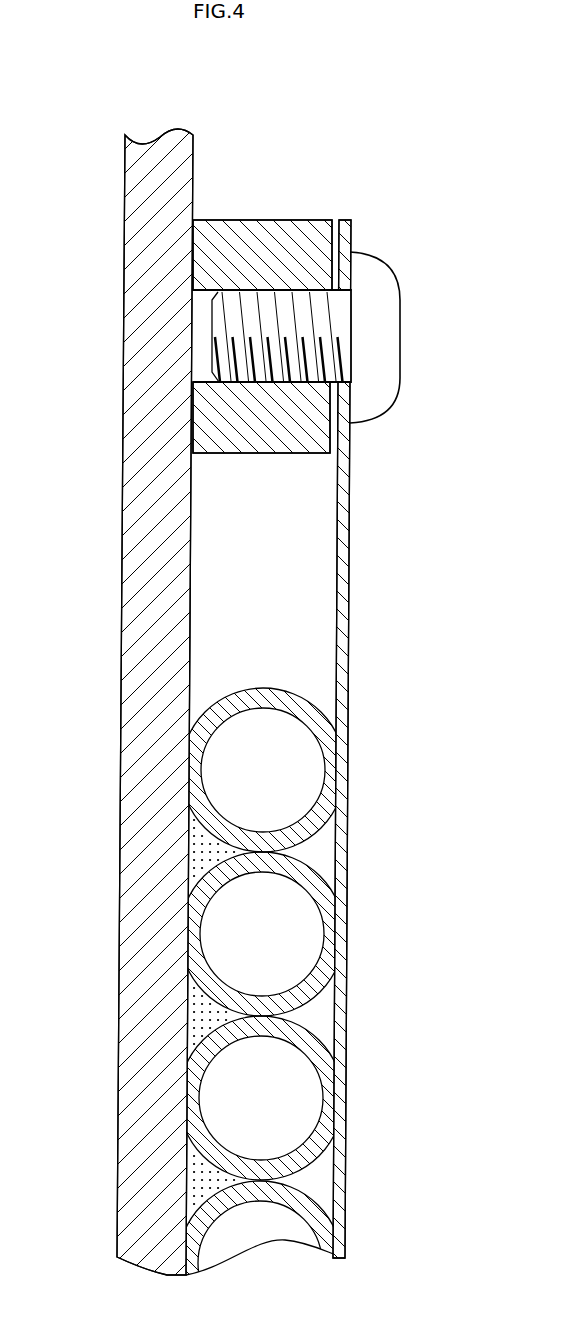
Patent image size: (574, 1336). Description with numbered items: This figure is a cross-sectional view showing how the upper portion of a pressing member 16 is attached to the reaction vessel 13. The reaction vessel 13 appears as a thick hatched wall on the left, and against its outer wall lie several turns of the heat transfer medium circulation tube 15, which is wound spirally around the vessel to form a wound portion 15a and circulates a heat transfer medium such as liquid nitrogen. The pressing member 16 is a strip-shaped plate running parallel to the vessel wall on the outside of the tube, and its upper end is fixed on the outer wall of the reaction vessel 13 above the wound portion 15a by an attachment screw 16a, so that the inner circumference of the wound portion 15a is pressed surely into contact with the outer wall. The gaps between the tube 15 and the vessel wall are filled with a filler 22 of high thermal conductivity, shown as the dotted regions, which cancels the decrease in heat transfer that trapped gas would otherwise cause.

The reaction vessel 13 is at (145, 593).
The heat transfer medium circulation tube 15 is at (302, 1012).
The wound portion 15a is at (323, 1072).
The pressing member 16 is at (342, 606).
The attachment screw 16a is at (388, 353).
The filler 22 is at (203, 853).